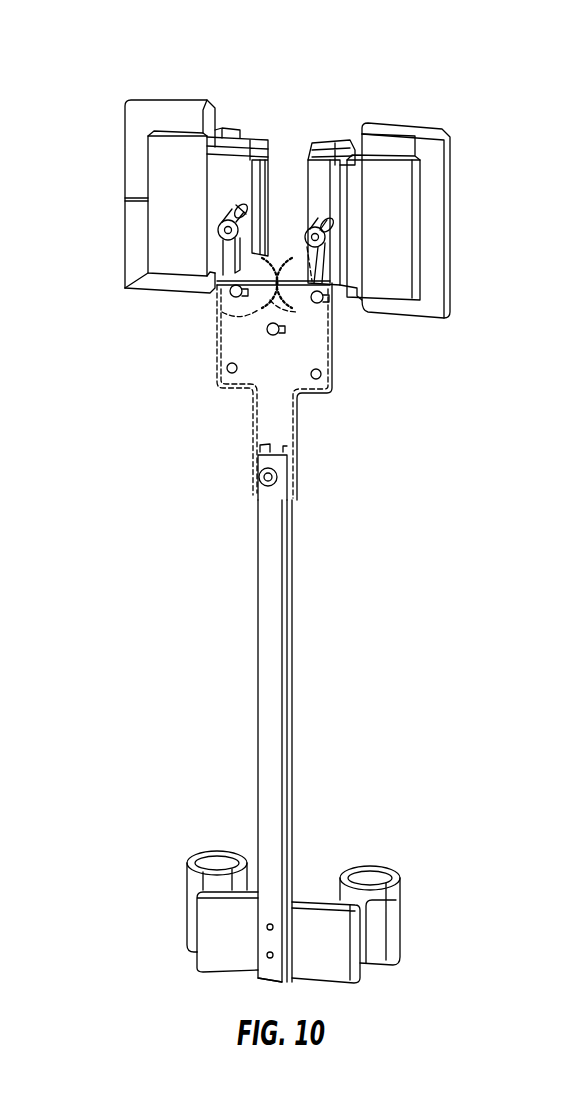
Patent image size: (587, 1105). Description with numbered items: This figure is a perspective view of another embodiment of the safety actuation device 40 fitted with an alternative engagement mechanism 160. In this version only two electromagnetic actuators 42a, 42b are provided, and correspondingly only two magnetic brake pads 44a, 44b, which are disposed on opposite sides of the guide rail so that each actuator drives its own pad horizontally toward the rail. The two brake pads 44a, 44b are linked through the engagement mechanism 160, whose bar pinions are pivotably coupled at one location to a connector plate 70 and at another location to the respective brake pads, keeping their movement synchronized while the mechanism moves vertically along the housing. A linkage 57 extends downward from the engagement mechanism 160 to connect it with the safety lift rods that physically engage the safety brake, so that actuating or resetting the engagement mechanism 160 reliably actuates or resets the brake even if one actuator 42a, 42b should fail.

The safety actuation device 40 is at (108, 118).
The electromagnetic actuator 42a is at (143, 125).
The electromagnetic actuator 42b is at (433, 157).
The magnetic brake pad 44a is at (255, 192).
The magnetic brake pad 44b is at (310, 197).
The engagement mechanism 160 is at (193, 327).
The connector plate 70 is at (273, 404).
The linkage 57 is at (277, 652).